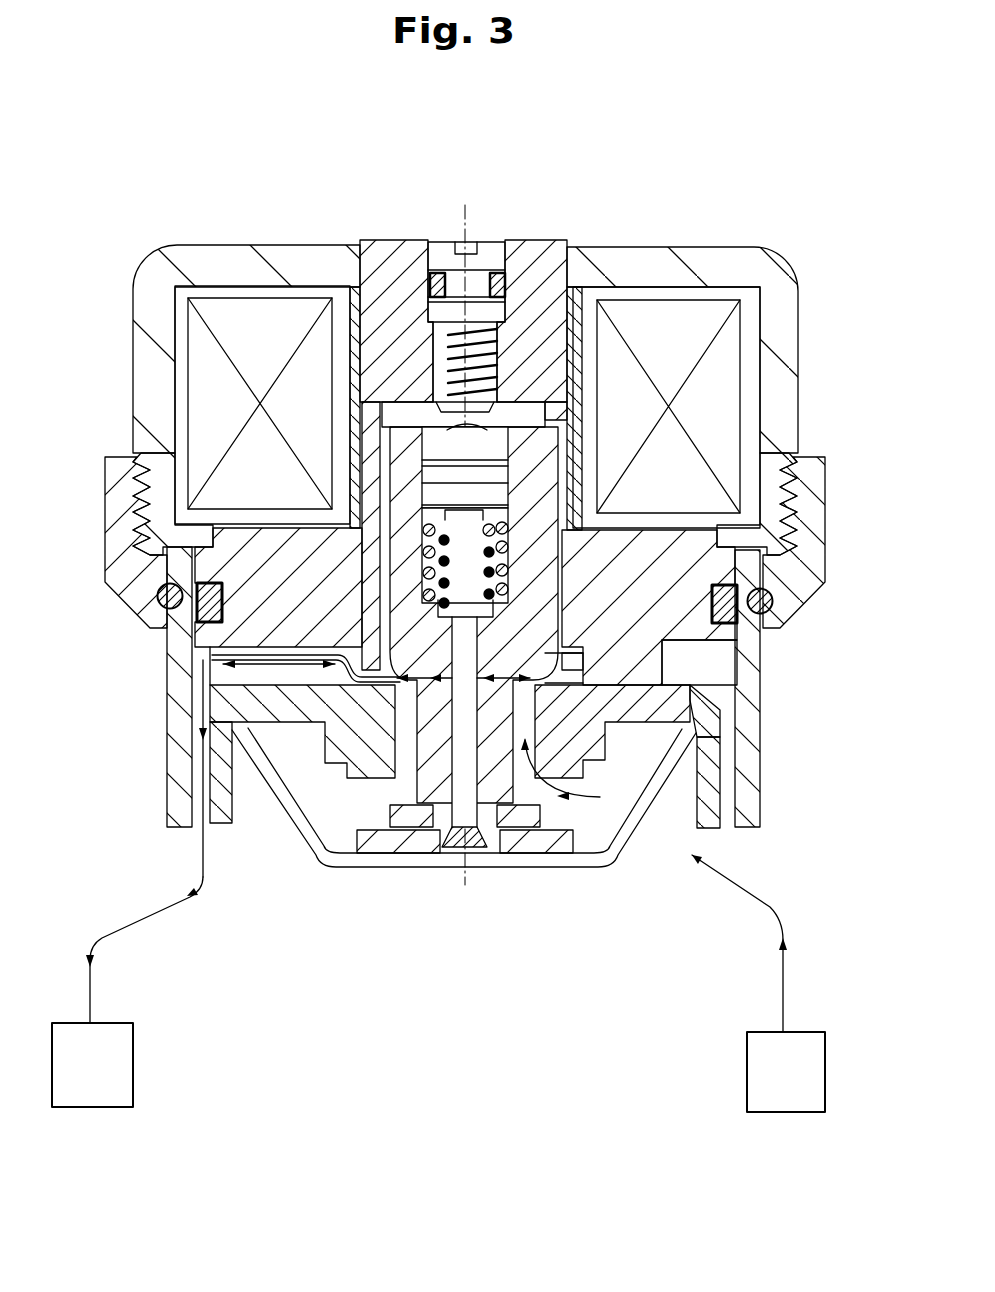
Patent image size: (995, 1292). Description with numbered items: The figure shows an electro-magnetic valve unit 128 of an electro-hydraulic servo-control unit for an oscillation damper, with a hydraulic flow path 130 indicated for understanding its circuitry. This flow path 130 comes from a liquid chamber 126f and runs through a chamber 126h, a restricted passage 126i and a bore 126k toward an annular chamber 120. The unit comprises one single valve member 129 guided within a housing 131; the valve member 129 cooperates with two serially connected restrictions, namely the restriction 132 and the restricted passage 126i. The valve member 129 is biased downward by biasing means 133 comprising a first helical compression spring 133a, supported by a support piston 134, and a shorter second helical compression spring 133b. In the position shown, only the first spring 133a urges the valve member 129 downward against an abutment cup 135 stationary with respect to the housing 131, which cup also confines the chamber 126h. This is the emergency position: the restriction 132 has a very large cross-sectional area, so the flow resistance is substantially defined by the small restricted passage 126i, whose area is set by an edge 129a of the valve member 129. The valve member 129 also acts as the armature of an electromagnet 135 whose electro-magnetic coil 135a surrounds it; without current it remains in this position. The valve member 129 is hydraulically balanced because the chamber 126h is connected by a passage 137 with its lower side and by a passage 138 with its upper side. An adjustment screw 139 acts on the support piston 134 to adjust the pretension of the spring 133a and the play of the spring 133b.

The annular chamber 120 is at (102, 1090).
The liquid chamber 126f is at (783, 1103).
The chamber 126h is at (587, 813).
The restricted passage 126i is at (312, 817).
The bore 126k is at (267, 673).
The electro-magnetic valve unit 128 is at (812, 388).
The valve member 129 is at (580, 447).
The edge 129a is at (345, 660).
The hydraulic flow path 130 is at (92, 978).
The housing 131 is at (682, 260).
The restriction 132 is at (397, 790).
The biasing means 133 is at (473, 550).
The first helical compression spring 133a is at (422, 512).
The second helical compression spring 133b is at (425, 535).
The support piston 134 is at (448, 450).
The abutment cup / electromagnet 135 is at (723, 292).
The electro-magnetic coil 135a is at (695, 333).
The passage 137 is at (545, 812).
The passage 138 is at (380, 576).
The adjustment screw 139 is at (487, 257).